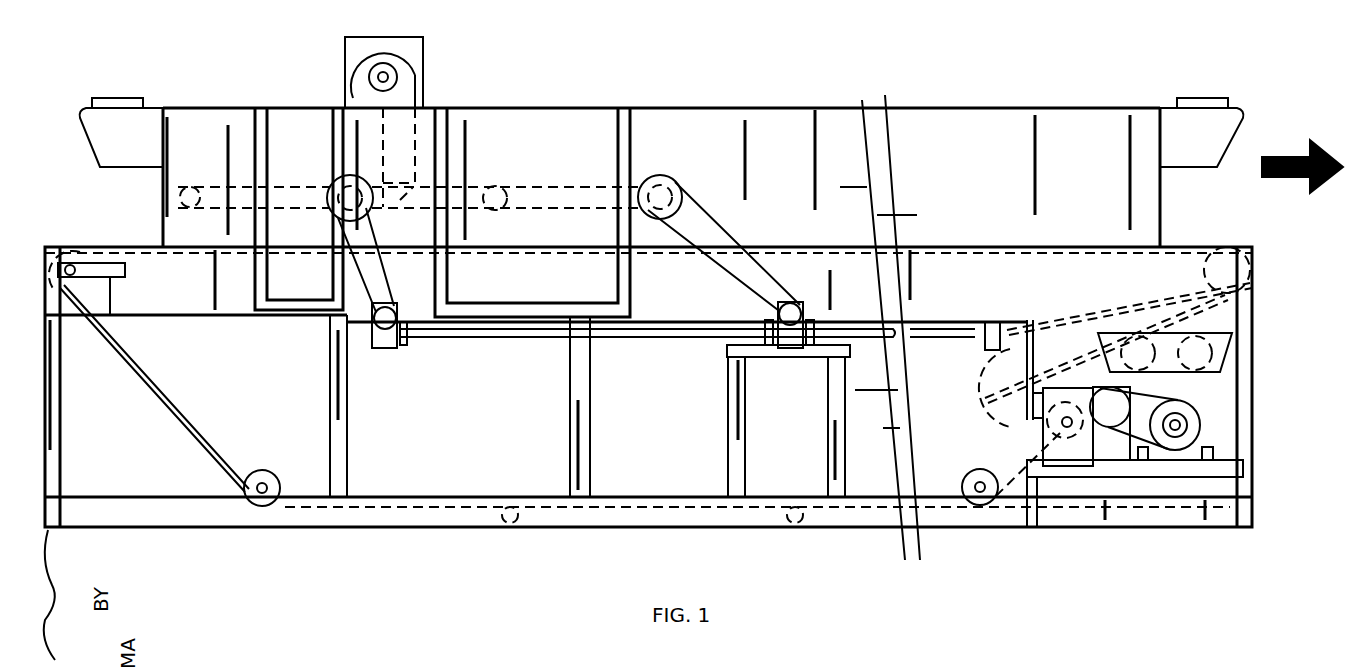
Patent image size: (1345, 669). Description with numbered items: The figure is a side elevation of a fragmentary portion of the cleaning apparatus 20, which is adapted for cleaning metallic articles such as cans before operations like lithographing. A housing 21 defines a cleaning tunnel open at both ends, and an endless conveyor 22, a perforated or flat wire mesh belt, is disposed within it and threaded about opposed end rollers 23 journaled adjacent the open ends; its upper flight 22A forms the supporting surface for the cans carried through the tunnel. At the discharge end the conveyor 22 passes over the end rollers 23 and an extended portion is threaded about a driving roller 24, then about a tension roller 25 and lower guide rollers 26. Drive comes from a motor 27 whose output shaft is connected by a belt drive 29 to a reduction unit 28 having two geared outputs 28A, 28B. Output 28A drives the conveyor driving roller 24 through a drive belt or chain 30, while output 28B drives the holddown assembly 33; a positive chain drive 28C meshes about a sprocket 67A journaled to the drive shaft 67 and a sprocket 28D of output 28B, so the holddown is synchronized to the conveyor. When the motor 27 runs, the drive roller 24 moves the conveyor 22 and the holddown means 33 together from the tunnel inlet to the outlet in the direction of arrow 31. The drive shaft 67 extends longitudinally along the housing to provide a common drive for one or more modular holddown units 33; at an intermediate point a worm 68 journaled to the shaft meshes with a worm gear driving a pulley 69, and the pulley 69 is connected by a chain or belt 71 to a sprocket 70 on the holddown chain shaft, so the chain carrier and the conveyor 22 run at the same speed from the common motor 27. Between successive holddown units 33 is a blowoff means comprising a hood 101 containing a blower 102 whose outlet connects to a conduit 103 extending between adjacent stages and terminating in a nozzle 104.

The apparatus 20 is at (1252, 95).
The housing 21 is at (1008, 110).
The endless conveyor 22 is at (1052, 247).
The upper flight 22A is at (944, 240).
The end rollers 23 is at (52, 265).
The driving roller 24 is at (975, 425).
The tension roller 25 is at (1138, 353).
The lower guide rollers 26 is at (262, 494).
The motor 27 is at (1200, 420).
The reduction unit 28 is at (1093, 440).
The geared output 28A is at (1060, 468).
The geared output 28B is at (1043, 432).
The positive chain drive 28C is at (1060, 337).
The sprocket 28D is at (1032, 406).
The belt drive 29 is at (1125, 400).
The drive belt or chain 30 is at (1045, 385).
The arrow 31 is at (1268, 158).
The holddown assembly 33 is at (280, 187).
The drive shaft 67 is at (512, 338).
The sprocket 67A is at (1030, 325).
The worm 68 is at (387, 305).
The pulley 69 is at (397, 337).
The sprocket 70 is at (345, 180).
The chain or belt 71 is at (733, 245).
The hood 101 is at (425, 52).
The blower 102 is at (415, 70).
The conduit 103 is at (402, 157).
The nozzle 104 is at (413, 187).